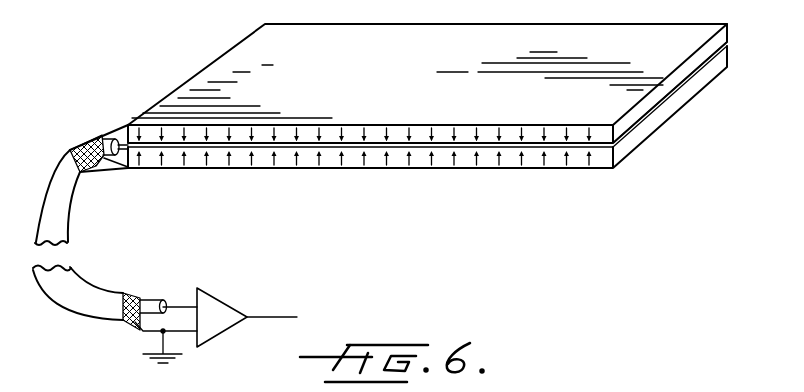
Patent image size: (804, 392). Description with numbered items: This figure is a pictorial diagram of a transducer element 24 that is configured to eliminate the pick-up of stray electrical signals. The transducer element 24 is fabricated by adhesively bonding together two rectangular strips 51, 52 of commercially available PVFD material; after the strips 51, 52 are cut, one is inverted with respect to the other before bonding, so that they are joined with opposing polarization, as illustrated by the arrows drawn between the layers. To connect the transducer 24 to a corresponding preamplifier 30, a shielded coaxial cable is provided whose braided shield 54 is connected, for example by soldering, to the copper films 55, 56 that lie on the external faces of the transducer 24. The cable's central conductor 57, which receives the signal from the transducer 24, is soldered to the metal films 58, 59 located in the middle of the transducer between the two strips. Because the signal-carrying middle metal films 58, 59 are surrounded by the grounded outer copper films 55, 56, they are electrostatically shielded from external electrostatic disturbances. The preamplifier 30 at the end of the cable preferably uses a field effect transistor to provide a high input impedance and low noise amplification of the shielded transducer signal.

The transducer element 24 is at (447, 126).
The preamplifier 30 is at (230, 305).
The rectangular strip 51 is at (642, 142).
The rectangular strip 52 is at (713, 48).
The braided shield 54 is at (83, 135).
The copper film 55 is at (48, 178).
The copper film 56 is at (182, 90).
The central conductor 57 is at (116, 172).
The metal film 58 is at (670, 92).
The metal film 59 is at (686, 84).